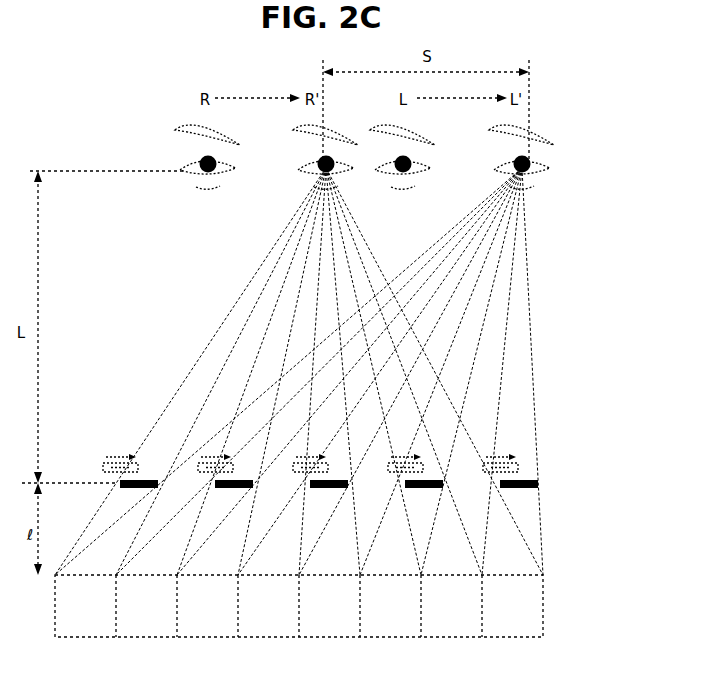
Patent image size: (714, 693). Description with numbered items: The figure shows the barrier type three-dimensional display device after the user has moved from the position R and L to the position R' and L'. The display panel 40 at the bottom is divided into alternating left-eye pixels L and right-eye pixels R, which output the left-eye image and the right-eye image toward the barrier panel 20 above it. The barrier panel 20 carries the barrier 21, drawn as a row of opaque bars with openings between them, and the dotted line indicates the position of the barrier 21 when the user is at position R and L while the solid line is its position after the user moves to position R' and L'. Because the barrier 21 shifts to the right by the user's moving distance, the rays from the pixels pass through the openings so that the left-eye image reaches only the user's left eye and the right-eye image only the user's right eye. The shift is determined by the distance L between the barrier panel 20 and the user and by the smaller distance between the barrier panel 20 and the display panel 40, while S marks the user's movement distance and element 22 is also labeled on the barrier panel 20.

The barrier panel 20 is at (381, 461).
The barrier 21 is at (538, 481).
The lens 22 is at (500, 458).
The display panel 40 is at (530, 607).